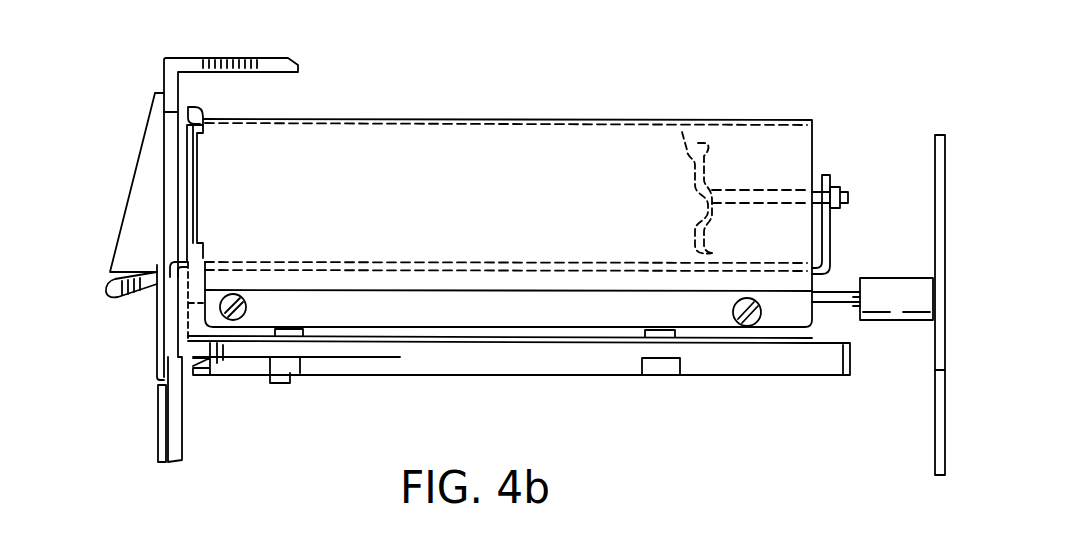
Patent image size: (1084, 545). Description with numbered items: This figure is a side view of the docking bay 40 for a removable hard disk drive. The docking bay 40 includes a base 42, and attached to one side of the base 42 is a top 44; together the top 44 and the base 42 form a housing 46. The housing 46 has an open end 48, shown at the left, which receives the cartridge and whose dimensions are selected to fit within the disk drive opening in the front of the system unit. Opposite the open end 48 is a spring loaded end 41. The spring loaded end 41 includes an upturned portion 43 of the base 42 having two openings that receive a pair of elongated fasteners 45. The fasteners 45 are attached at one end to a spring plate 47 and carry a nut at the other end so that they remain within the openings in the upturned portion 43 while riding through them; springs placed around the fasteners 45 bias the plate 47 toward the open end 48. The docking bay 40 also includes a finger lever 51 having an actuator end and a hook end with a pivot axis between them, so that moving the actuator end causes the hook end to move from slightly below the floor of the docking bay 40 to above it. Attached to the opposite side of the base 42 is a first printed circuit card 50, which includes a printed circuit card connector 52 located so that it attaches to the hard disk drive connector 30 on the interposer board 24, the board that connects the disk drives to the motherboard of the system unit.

The interposer board 24 is at (935, 418).
The connector 30 is at (897, 302).
The docking bay 40 is at (612, 118).
The spring loaded end 41 is at (782, 177).
The base 42 is at (810, 328).
The upturned portion 43 is at (830, 243).
The top 44 is at (435, 148).
The elongated fasteners 45 is at (738, 188).
The housing 46 is at (207, 192).
The spring plate 47 is at (688, 132).
The open end 48 is at (187, 150).
The first printed circuit card 50 is at (838, 292).
The finger lever 51 is at (106, 295).
The printed circuit card connector 52 is at (853, 310).